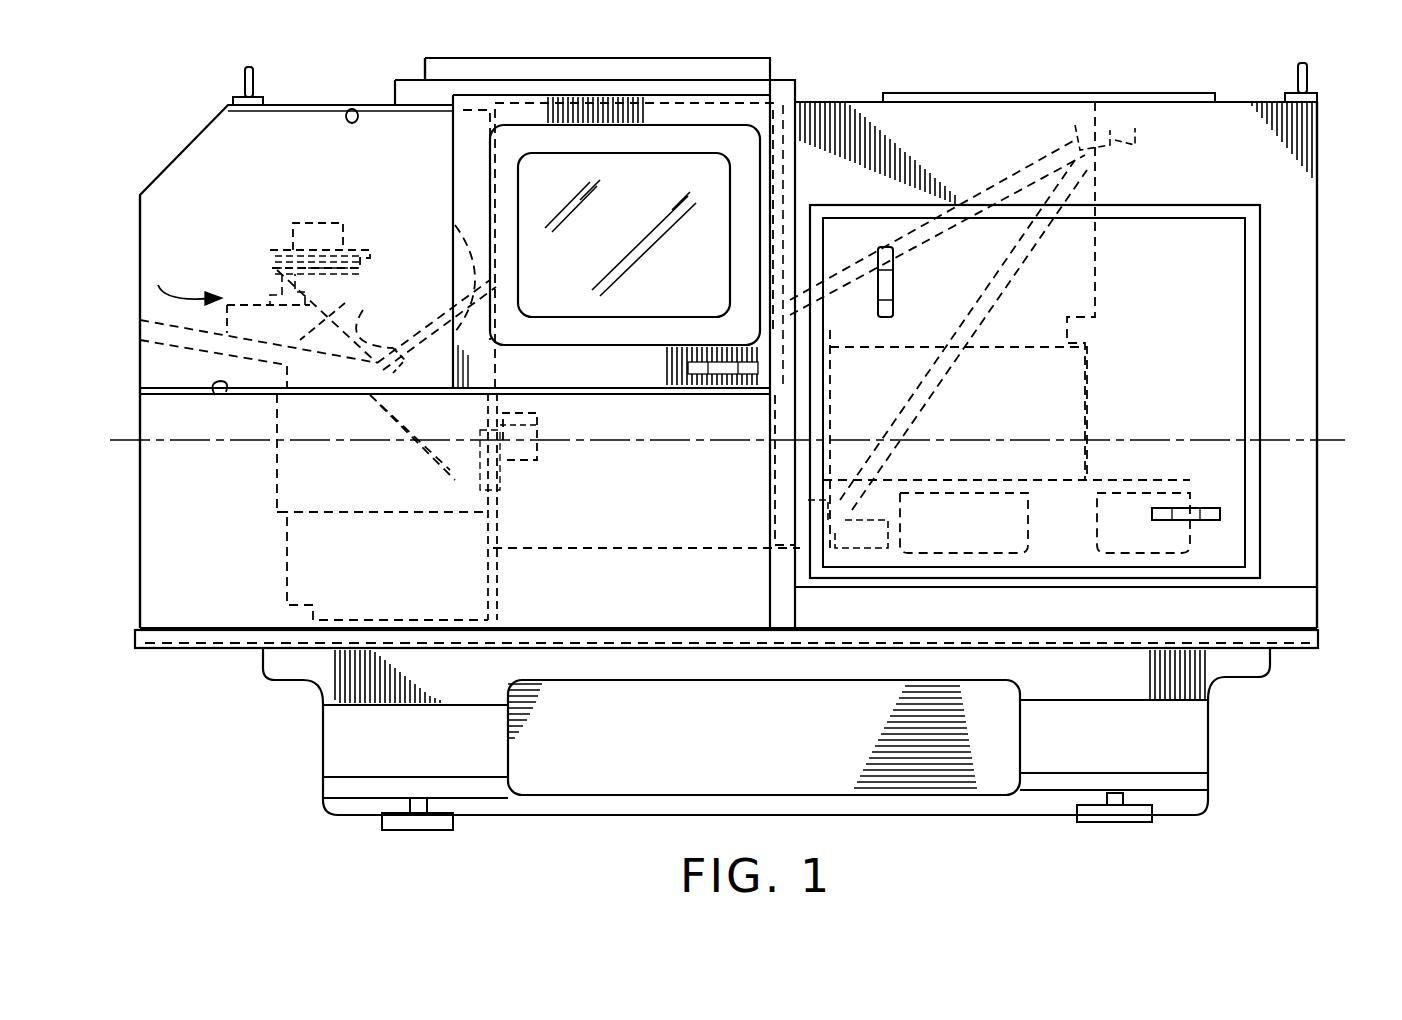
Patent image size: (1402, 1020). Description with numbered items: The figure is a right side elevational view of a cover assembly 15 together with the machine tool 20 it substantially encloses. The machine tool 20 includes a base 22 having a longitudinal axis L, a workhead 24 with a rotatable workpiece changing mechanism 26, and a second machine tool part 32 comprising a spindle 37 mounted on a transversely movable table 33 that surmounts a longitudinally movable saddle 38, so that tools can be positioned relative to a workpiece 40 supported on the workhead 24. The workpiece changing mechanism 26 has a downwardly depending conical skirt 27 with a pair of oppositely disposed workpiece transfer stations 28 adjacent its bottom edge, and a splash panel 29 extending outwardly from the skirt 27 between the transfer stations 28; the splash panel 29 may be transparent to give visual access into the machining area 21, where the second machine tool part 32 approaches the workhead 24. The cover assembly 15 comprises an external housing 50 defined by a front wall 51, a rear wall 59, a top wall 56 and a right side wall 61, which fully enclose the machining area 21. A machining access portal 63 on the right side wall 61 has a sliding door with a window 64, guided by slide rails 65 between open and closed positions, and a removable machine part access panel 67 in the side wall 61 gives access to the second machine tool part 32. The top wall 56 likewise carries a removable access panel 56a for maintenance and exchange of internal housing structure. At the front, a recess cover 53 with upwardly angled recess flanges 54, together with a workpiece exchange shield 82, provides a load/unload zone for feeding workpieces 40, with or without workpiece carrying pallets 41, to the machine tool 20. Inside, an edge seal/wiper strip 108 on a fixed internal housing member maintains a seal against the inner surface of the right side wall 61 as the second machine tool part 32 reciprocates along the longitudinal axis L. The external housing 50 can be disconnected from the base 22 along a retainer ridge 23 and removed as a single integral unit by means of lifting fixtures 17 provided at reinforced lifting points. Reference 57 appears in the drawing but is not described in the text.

The cover assembly 15 is at (322, 100).
The lifting fixtures 17 is at (243, 80).
The machine tool 20 is at (257, 578).
The machining area 21 is at (643, 592).
The base 22 is at (312, 678).
The retainer ridge 23 is at (1318, 628).
The workhead 24 is at (305, 478).
The rotatable workpiece changing mechanism 26 is at (190, 284).
The conical skirt 27 is at (325, 318).
The workpiece transfer stations 28 is at (278, 213).
The splash panel 29 is at (458, 243).
The second machine tool part 32 is at (1050, 398).
The table 33 is at (1068, 492).
The spindle 37 is at (775, 470).
The saddle 38 is at (893, 632).
The workpieces 40 is at (343, 222).
The workpiece carrying pallets 41 is at (275, 262).
The external housing 50 is at (1172, 82).
The front wall 51 is at (140, 560).
The recess cover 53 is at (178, 324).
The recess flanges 54 is at (364, 315).
The top wall 56 is at (855, 100).
The removable access panel 56a is at (1060, 93).
The monitor housing 57 is at (770, 60).
The rear wall 59 is at (1318, 358).
The right side wall 61 is at (208, 503).
The machining access portal 63 is at (748, 180).
The window 64 is at (624, 235).
The slide rails 65 is at (347, 108).
The machine part access panel 67 is at (1245, 415).
The workpiece exchange shield 82 is at (480, 175).
The edge seal/wiper strip 108 is at (963, 292).
The longitudinal axis L is at (110, 440).